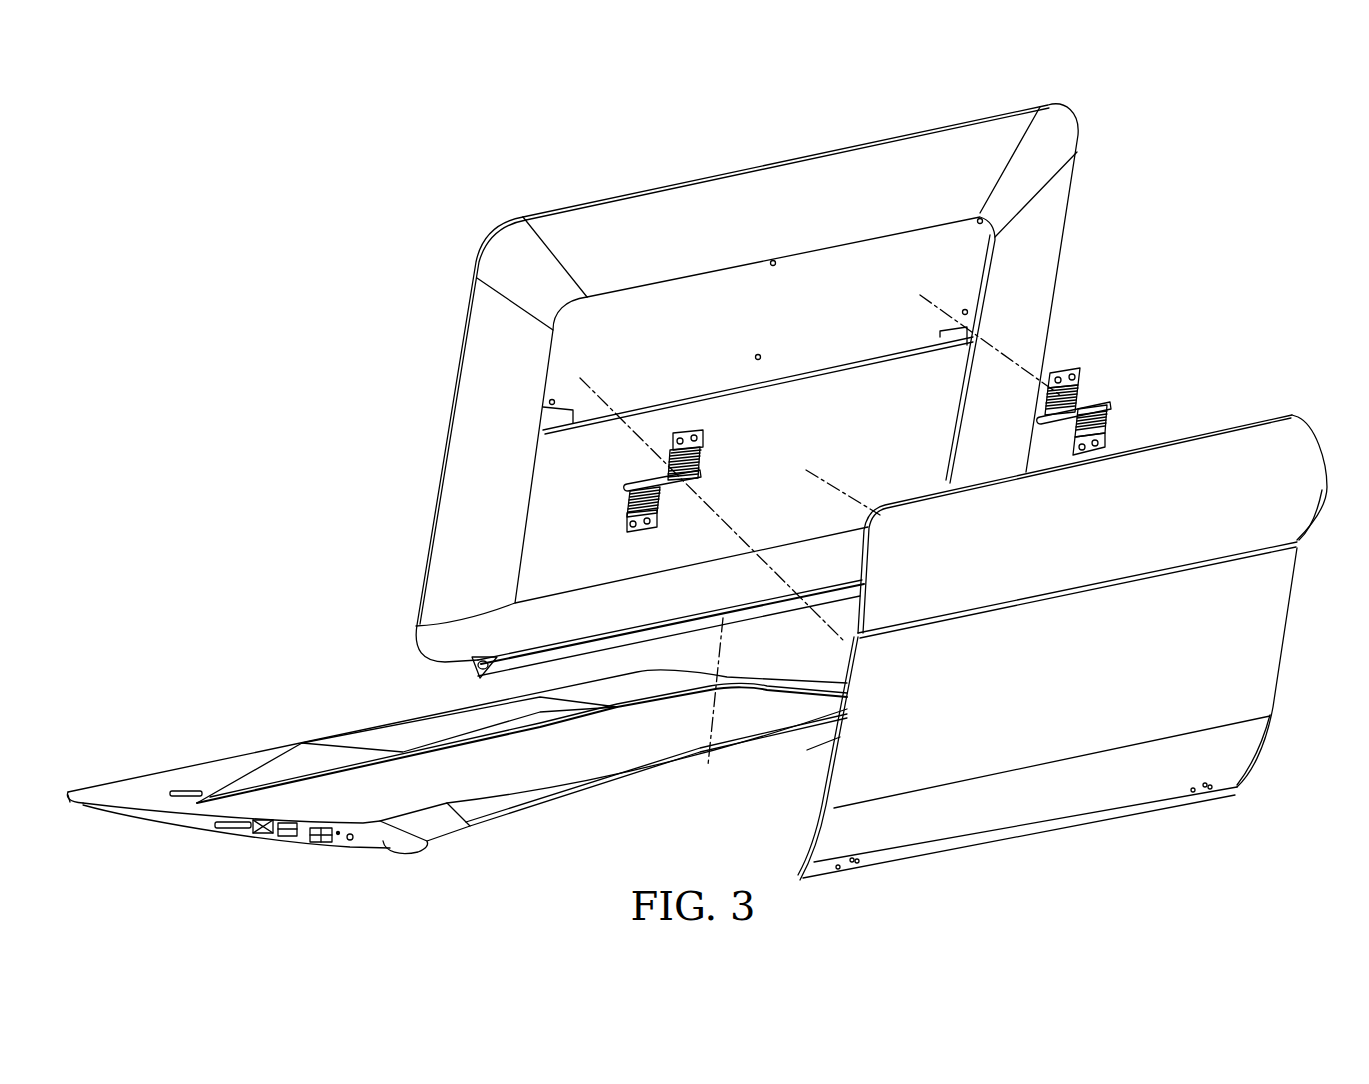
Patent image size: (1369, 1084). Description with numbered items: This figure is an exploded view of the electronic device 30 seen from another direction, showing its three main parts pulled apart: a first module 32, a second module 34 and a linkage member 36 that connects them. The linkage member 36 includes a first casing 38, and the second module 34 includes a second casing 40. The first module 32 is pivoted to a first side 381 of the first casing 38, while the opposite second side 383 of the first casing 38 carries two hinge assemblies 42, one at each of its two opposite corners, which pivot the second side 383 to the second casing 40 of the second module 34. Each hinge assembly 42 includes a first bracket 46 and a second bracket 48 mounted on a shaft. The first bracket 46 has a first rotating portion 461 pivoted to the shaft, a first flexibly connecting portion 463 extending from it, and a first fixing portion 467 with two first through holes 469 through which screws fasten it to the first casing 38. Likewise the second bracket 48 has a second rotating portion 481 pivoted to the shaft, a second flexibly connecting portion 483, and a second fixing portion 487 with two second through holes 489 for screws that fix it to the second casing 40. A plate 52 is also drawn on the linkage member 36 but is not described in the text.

The electronic device 30 is at (1222, 170).
The first module 32 is at (243, 742).
The second module 34 is at (490, 218).
The linkage member 36 is at (1281, 696).
The first casing 38 is at (1256, 746).
The second casing 40 is at (1048, 222).
The hinge assembly 42 is at (1052, 438).
The first bracket 46 is at (630, 476).
The second bracket 48 is at (698, 425).
The cover plate 52 is at (1260, 440).
The first side 381 is at (1081, 818).
The second side 383 is at (1298, 537).
The first rotating portion 461 is at (628, 486).
The first flexibly connecting portion 463 is at (629, 506).
The first fixing portion 467 is at (636, 535).
The first through holes 469 is at (628, 524).
The second rotating portion 481 is at (701, 478).
The second flexibly connecting portion 483 is at (701, 452).
The second fixing portion 487 is at (680, 430).
The second through holes 489 is at (677, 430).